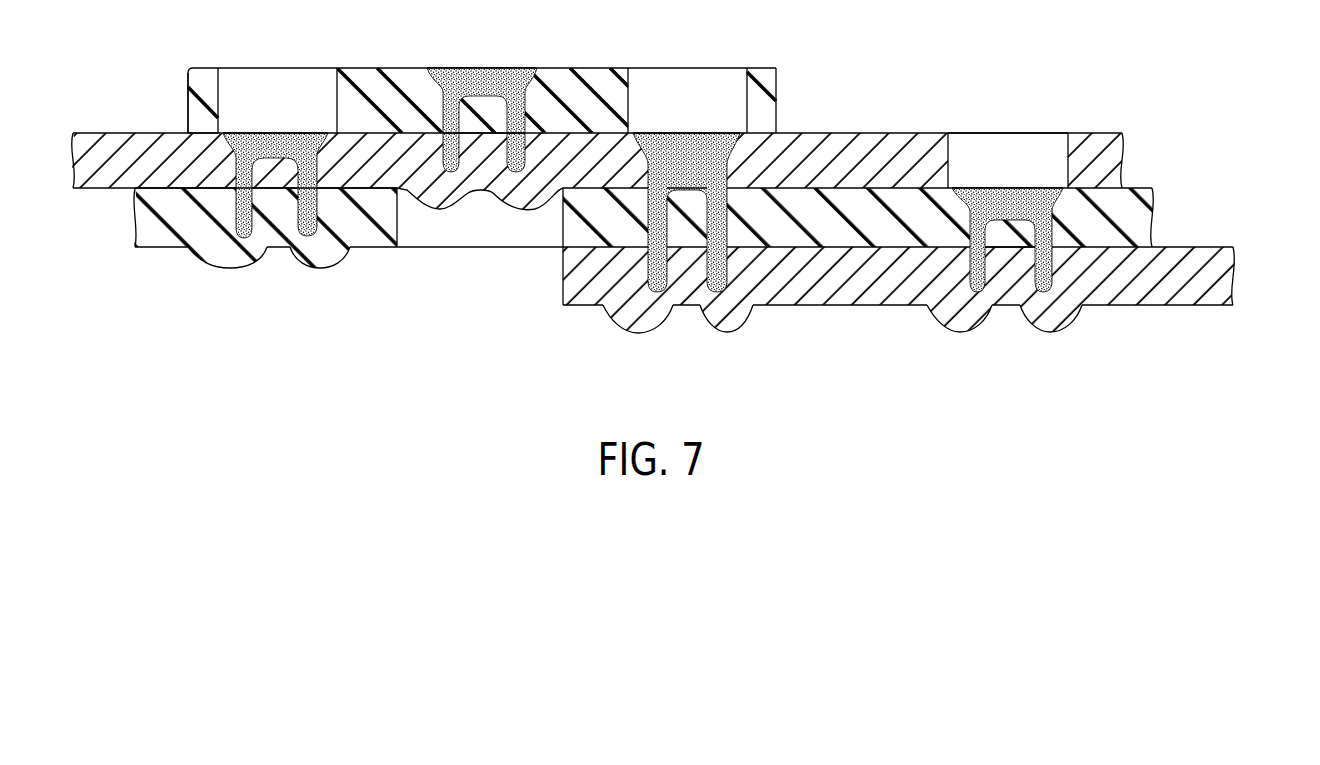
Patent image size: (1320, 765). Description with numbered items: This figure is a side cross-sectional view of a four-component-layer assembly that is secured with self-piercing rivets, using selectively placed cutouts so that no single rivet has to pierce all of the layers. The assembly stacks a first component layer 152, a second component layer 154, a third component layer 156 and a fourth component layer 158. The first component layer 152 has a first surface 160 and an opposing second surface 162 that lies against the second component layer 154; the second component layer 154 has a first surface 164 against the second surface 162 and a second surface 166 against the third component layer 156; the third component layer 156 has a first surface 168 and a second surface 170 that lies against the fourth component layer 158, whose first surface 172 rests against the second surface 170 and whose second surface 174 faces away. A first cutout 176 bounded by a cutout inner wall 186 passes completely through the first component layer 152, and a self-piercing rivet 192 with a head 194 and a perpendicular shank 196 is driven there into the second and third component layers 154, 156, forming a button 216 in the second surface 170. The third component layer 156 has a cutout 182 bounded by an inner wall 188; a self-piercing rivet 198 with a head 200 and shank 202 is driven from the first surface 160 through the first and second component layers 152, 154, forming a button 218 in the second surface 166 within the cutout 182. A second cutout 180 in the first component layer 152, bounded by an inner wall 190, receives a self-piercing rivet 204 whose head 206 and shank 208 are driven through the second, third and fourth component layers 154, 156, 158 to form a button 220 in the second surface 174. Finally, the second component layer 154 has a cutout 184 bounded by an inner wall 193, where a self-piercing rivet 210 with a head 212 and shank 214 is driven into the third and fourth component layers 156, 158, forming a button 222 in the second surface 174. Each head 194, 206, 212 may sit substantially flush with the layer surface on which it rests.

The first component layer 152 is at (194, 90).
The second component layer 154 is at (80, 149).
The third component layer 156 is at (137, 211).
The fourth component layer 158 is at (1225, 264).
The first surface 160 is at (197, 68).
The second surface 162 is at (203, 136).
The first surface 164 is at (91, 133).
The second surface 166 is at (102, 188).
The first surface 168 is at (1137, 187).
The second surface 170 is at (143, 248).
The first surface 172 is at (1206, 246).
The second surface 174 is at (1217, 306).
The first cutout 176 is at (316, 82).
The second cutout 180 is at (730, 78).
The cutout 182 is at (422, 232).
The cutout 184 is at (1052, 130).
The cutout inner wall 186 is at (218, 88).
The cutout inner wall 188 is at (563, 223).
The cutout inner wall 190 is at (628, 88).
The self-piercing rivet 192 is at (293, 133).
The cutout inner wall 193 is at (953, 140).
The head 194 is at (283, 137).
The shank 196 is at (203, 250).
The self-piercing rivet 198 is at (433, 68).
The head 200 is at (456, 82).
The shank 202 is at (490, 78).
The self-piercing rivet 204 is at (682, 133).
The head 206 is at (705, 133).
The shank 208 is at (653, 283).
The self-piercing rivet 210 is at (1025, 189).
The head 212 is at (1010, 190).
The shank 214 is at (1048, 291).
The button 216 is at (233, 268).
The button 218 is at (447, 208).
The button 220 is at (738, 333).
The button 222 is at (966, 333).